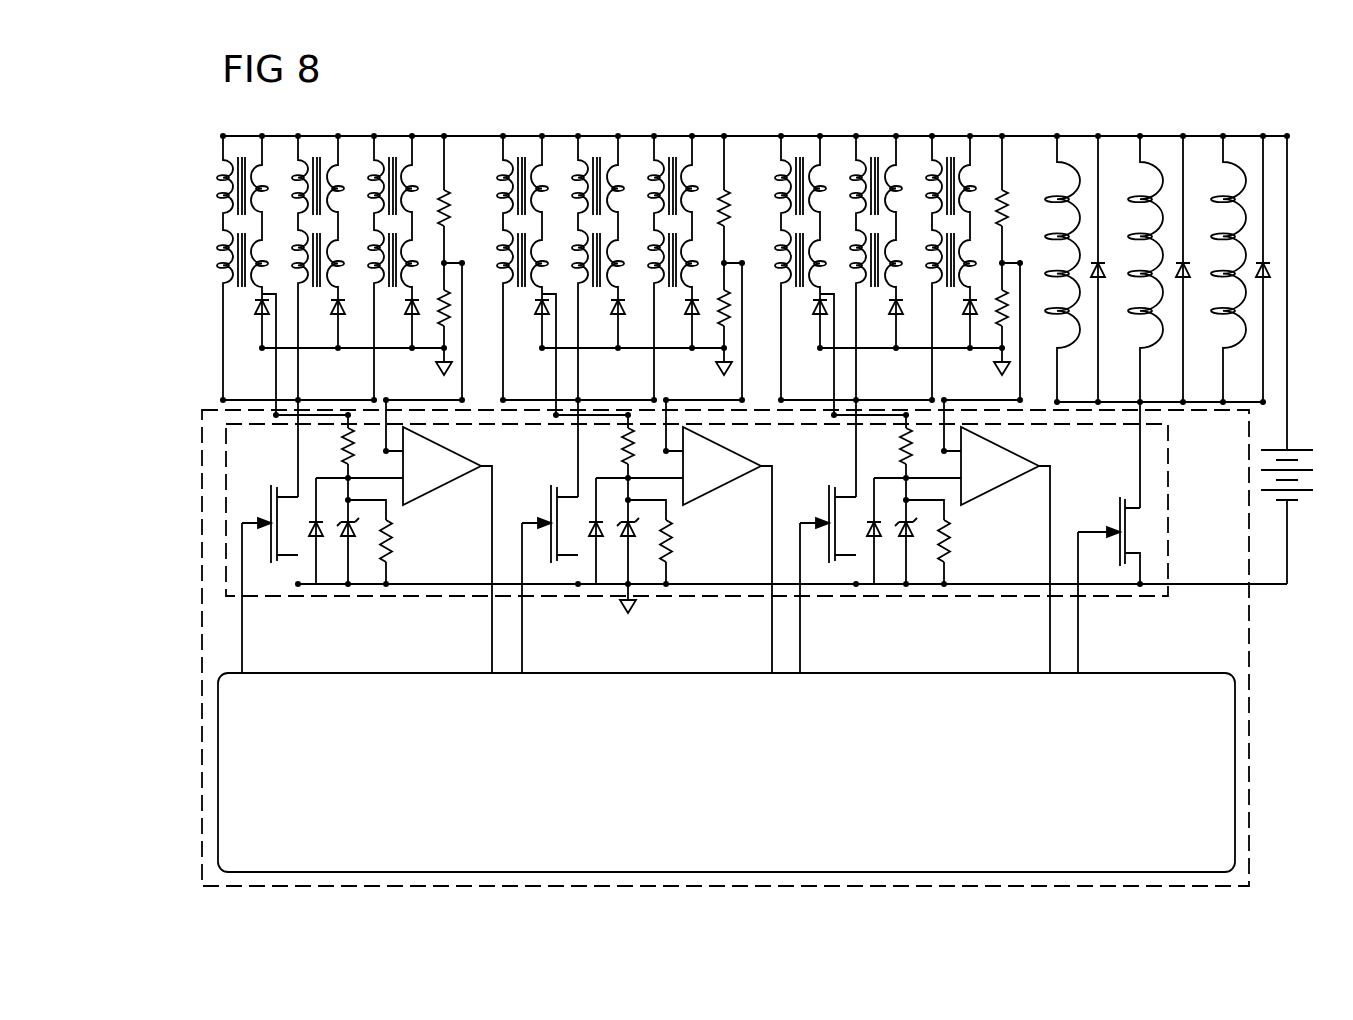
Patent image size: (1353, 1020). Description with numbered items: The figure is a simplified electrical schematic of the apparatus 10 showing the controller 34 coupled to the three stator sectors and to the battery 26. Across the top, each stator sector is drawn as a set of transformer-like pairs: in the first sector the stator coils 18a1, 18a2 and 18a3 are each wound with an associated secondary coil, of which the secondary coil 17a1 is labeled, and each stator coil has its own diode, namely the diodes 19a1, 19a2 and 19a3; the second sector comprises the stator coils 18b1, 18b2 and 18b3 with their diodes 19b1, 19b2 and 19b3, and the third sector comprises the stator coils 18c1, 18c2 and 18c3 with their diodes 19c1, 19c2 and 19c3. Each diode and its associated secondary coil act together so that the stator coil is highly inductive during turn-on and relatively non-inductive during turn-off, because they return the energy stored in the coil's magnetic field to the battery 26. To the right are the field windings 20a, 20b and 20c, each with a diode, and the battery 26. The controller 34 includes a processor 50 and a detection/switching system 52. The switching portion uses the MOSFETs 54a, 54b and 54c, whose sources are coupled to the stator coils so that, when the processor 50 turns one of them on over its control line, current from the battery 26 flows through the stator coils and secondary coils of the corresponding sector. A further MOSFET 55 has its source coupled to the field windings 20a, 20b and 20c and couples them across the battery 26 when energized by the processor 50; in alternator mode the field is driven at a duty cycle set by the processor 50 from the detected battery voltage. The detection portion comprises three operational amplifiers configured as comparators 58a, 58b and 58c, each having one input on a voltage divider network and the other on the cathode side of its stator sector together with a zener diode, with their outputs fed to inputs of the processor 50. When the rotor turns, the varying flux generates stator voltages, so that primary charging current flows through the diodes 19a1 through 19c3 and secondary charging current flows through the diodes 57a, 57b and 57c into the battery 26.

The apparatus 10 is at (1268, 124).
The secondary coil 17a1 is at (257, 280).
The stator coil 18a1 is at (220, 258).
The stator coil 18b1 is at (297, 178).
The stator coil 18c1 is at (373, 180).
The stator coil 18a2 is at (483, 245).
The stator coil 18b2 is at (561, 245).
The stator coil 18c2 is at (648, 245).
The stator coil 18a3 is at (766, 245).
The stator coil 18b3 is at (843, 245).
The stator coil 18c3 is at (918, 245).
The diode 19a1 is at (256, 303).
The diode 19b1 is at (337, 309).
The diode 19c1 is at (411, 309).
The diode 19a2 is at (520, 380).
The diode 19b2 is at (616, 342).
The diode 19c2 is at (685, 342).
The diode 19a3 is at (787, 380).
The diode 19b3 is at (894, 342).
The diode 19c3 is at (963, 342).
The field winding 20a is at (1057, 136).
The field winding 20b is at (1140, 136).
The field winding 20c is at (1223, 136).
The battery 26 is at (1298, 448).
The controller 34 is at (1253, 667).
The processor 50 is at (905, 690).
The detection/switching system 52 is at (407, 598).
The MOSFET 54a is at (268, 507).
The MOSFET 54b is at (537, 570).
The MOSFET 54c is at (815, 570).
The MOSFET 55 is at (1120, 517).
The diode 57a is at (314, 546).
The diode 57b is at (569, 557).
The diode 57c is at (843, 557).
The comparator 58a is at (451, 477).
The comparator 58b is at (727, 550).
The comparator 58c is at (1005, 550).